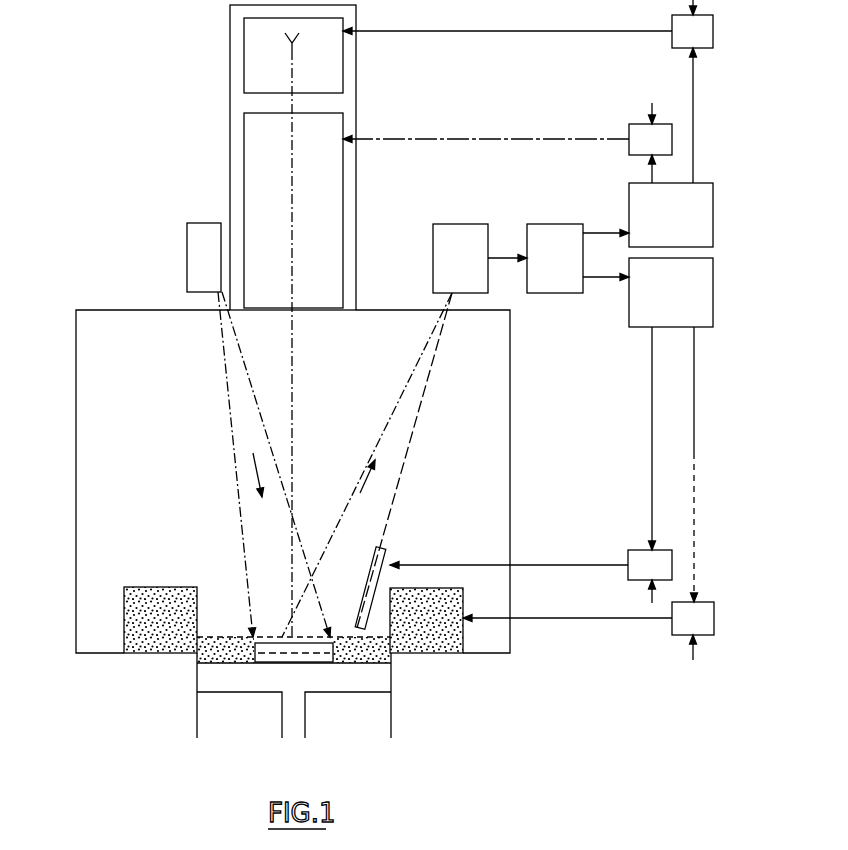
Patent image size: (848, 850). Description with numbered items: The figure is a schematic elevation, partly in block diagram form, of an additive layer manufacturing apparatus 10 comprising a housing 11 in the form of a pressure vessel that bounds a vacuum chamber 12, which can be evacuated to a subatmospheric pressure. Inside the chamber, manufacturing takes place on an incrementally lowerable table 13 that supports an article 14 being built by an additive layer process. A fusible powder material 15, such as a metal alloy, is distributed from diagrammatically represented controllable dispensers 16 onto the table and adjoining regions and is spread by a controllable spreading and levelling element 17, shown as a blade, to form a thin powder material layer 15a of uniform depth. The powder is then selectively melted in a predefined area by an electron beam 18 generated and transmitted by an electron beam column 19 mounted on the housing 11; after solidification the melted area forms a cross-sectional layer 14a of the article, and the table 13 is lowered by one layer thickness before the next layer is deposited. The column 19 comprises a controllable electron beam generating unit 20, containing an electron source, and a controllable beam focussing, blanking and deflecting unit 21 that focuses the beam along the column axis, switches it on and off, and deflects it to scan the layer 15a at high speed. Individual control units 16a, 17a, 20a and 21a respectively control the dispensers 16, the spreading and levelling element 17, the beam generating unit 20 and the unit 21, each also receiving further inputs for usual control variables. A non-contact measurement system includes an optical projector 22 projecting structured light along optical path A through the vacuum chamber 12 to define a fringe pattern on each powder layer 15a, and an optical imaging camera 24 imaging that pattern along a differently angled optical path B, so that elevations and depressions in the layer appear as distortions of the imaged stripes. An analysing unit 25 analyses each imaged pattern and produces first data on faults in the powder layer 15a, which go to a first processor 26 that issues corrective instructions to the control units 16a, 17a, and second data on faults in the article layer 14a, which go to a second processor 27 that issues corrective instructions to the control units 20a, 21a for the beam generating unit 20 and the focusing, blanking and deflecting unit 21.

The additive layer manufacturing apparatus 10 is at (148, 128).
The housing 11 is at (76, 378).
The vacuum chamber 12 is at (90, 423).
The incrementally lowerable table 13 is at (382, 693).
The article 14 is at (255, 648).
The cross-sectional layer 14a is at (295, 656).
The fusible powder material 15 is at (197, 657).
The powder material layer 15a is at (283, 637).
The controllable dispensers 16 is at (124, 612).
The control unit for powder material dispensers 16a is at (714, 618).
The spreading and levelling element 17 is at (365, 632).
The control unit for spreading and levelling element 17a is at (672, 567).
The electron beam 18 is at (292, 393).
The electron beam column 19 is at (230, 133).
The electron beam generating unit 20 is at (343, 75).
The control unit for beam generating unit 20a is at (713, 33).
The beam focussing, blanking and deflecting unit 21 is at (343, 177).
The control unit for beam focusing, blanking and deflecting unit 21a is at (672, 140).
The optical projector 22 is at (187, 251).
The optical imaging camera 24 is at (462, 224).
The analysing unit 25 is at (548, 224).
The first processor 26 is at (713, 290).
The second processor 27 is at (713, 218).